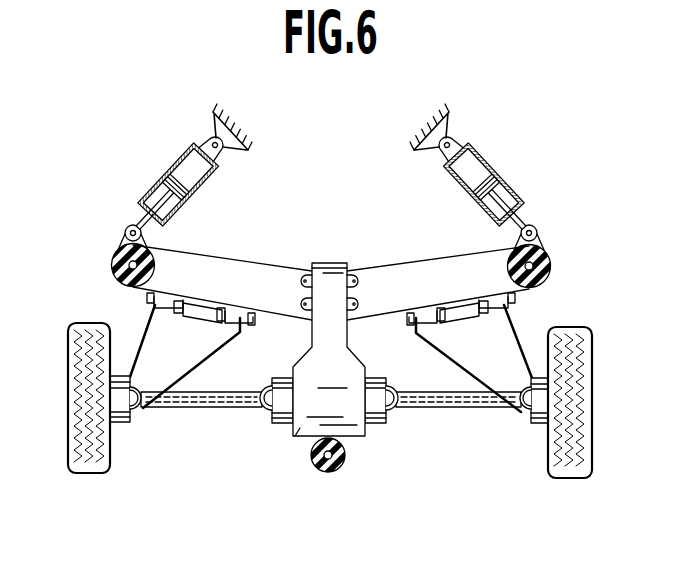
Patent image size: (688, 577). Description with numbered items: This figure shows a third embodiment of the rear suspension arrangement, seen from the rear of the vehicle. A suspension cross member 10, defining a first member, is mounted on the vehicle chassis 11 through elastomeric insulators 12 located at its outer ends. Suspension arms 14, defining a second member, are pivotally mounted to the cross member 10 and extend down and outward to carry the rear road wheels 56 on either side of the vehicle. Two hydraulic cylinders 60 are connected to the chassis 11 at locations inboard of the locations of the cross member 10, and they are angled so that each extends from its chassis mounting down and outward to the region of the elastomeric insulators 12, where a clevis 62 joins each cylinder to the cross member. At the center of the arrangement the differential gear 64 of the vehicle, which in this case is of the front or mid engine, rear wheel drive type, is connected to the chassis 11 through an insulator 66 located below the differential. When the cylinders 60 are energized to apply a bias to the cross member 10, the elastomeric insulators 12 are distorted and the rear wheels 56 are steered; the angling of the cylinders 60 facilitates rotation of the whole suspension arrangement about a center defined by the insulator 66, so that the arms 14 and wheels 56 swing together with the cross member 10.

The suspension cross member 10 is at (271, 277).
The vehicle chassis 11 is at (243, 128).
The elastomeric insulator 12 is at (122, 278).
The suspension arm 14 is at (172, 378).
The rear road wheel 56 is at (108, 463).
The cylinder 60 is at (217, 173).
The clevis 62 is at (118, 250).
The differential gear 64 is at (302, 423).
The insulator 66 is at (318, 457).